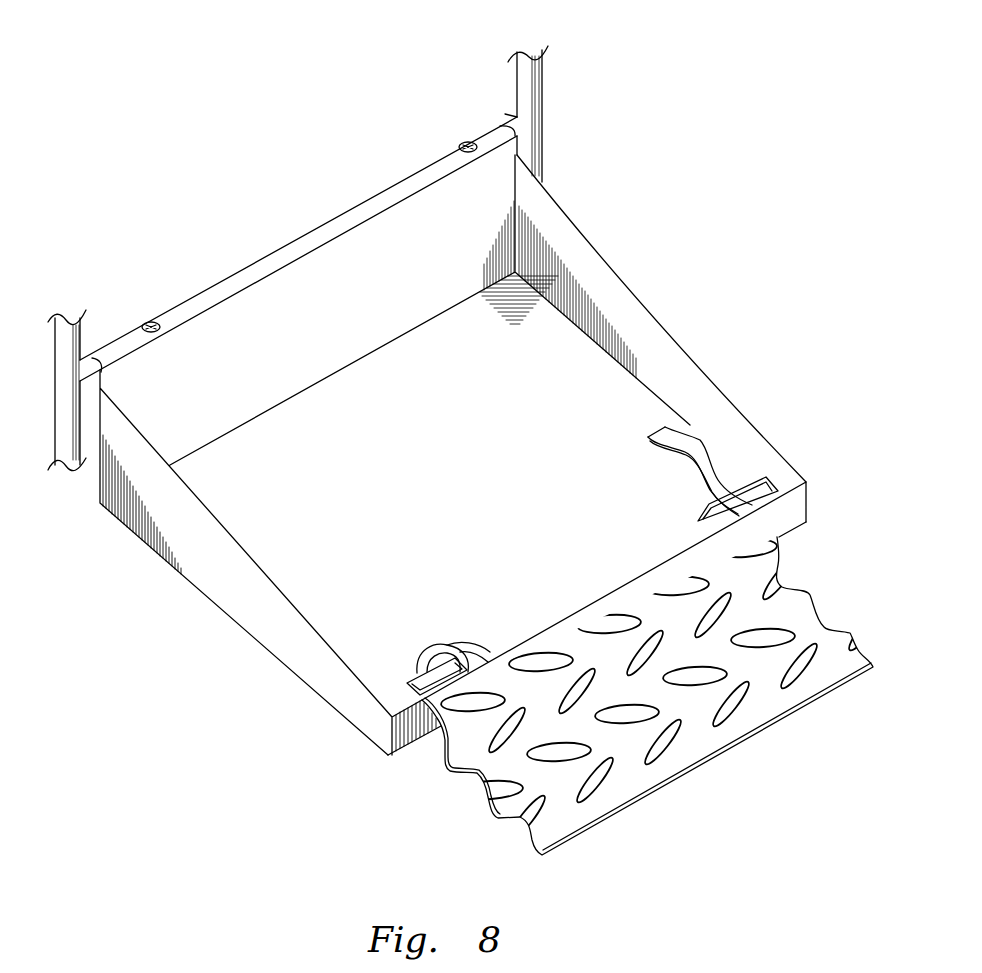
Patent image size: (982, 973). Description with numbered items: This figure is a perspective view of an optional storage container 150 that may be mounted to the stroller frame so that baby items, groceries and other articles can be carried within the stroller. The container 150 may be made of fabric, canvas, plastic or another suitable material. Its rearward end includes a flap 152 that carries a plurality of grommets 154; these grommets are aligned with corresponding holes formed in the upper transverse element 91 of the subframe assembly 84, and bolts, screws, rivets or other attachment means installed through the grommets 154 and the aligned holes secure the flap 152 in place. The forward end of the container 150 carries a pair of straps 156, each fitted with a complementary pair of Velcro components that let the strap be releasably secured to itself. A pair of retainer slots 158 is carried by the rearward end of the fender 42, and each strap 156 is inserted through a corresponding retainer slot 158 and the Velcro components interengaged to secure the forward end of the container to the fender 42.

The fender 42 is at (560, 635).
The subframe assembly 84 is at (543, 137).
The upper transverse element 91 is at (517, 117).
The storage container 150 is at (675, 357).
The flap 152 is at (320, 227).
The grommets 154 is at (462, 145).
The straps 156 is at (432, 650).
The retainer slots 158 is at (468, 652).